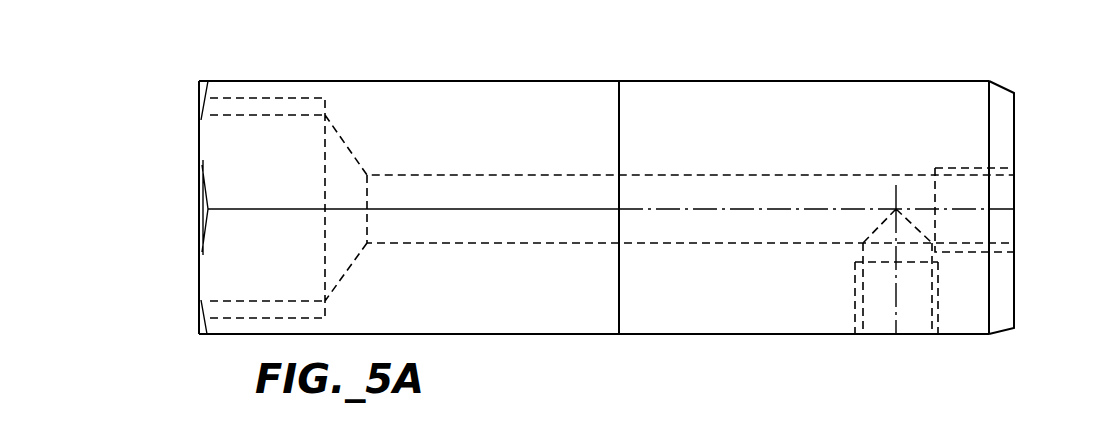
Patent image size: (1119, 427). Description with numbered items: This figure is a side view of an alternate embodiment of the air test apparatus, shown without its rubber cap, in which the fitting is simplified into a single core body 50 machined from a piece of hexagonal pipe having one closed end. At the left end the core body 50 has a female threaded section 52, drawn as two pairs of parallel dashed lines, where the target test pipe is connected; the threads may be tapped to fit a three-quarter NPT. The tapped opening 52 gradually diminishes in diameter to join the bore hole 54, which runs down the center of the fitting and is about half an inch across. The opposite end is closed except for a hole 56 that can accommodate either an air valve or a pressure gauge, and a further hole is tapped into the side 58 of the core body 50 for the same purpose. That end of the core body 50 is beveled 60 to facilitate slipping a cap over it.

The core body 50 is at (199, 68).
The female threaded section 52 is at (223, 118).
The bore hole 54 is at (180, 207).
The hole for air valve or pressure gauge 56 is at (1033, 211).
The side tapped hole 58 is at (894, 342).
The bevel 60 is at (1016, 90).